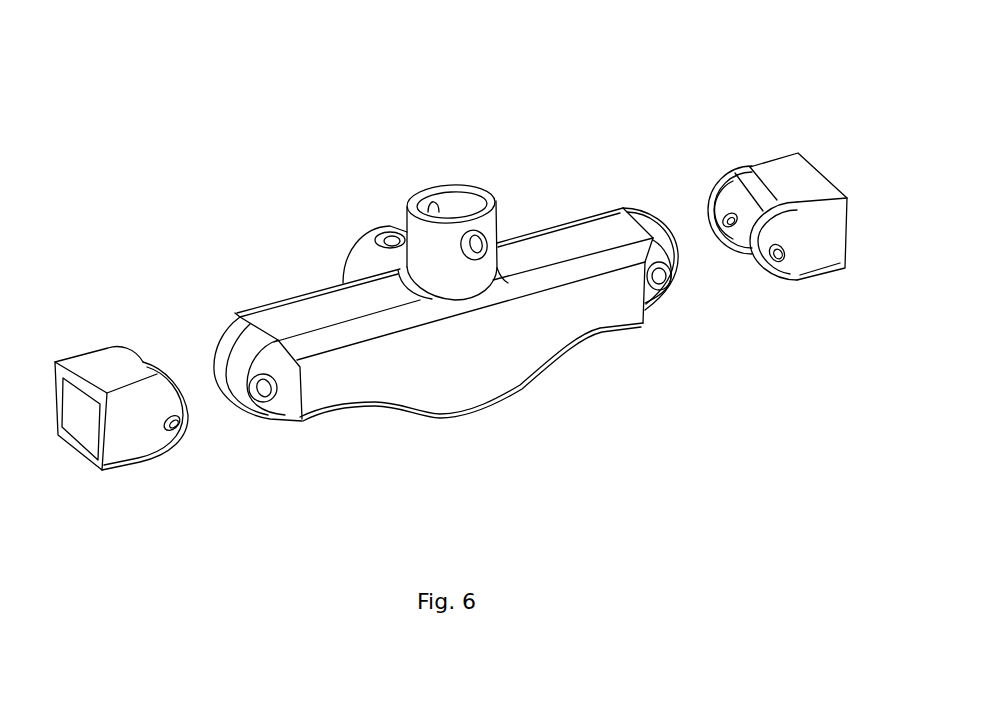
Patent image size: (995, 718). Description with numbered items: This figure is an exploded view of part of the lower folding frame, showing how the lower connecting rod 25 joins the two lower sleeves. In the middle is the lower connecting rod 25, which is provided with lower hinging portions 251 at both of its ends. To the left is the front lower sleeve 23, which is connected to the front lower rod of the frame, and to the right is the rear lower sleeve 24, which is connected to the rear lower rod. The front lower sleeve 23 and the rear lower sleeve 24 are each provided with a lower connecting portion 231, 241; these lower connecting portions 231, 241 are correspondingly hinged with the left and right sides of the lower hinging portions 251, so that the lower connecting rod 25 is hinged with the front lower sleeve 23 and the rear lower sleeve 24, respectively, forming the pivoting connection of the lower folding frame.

The front lower sleeve 23 is at (90, 360).
The lower connecting portion 231 is at (187, 425).
The rear lower sleeve 24 is at (800, 180).
The lower connecting portion 241 is at (760, 260).
The lower connecting rod 25 is at (337, 303).
The lower hinging portion 251 is at (262, 420).